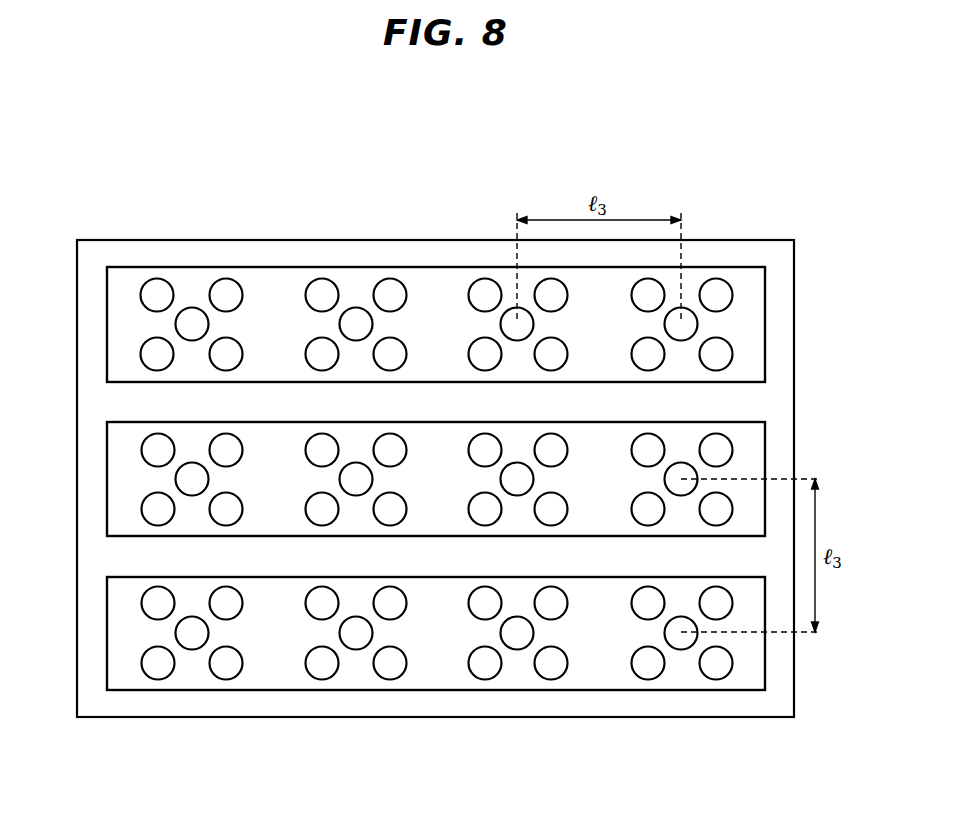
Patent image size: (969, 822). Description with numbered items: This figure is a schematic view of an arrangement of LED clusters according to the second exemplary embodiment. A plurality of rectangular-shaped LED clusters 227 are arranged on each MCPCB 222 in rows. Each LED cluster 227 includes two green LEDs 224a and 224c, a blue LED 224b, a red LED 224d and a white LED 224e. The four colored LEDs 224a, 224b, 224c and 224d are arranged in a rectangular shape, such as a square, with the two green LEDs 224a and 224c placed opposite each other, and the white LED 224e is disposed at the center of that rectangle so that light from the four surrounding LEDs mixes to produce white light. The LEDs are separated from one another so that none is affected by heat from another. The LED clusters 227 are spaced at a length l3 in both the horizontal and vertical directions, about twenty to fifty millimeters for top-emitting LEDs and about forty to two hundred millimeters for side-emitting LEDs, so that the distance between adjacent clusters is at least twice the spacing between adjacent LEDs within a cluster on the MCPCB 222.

The MCPCB 222 is at (758, 319).
The LED cluster 227 is at (168, 233).
The green LED 224a is at (157, 280).
The blue LED 224b is at (222, 280).
The green LED 224c is at (247, 281).
The red LED 224d is at (153, 339).
The white LED 224e is at (187, 309).